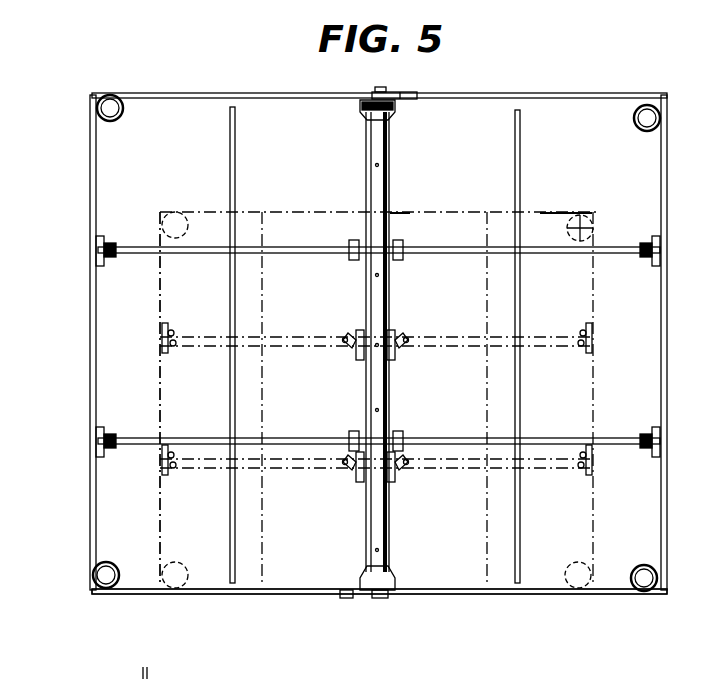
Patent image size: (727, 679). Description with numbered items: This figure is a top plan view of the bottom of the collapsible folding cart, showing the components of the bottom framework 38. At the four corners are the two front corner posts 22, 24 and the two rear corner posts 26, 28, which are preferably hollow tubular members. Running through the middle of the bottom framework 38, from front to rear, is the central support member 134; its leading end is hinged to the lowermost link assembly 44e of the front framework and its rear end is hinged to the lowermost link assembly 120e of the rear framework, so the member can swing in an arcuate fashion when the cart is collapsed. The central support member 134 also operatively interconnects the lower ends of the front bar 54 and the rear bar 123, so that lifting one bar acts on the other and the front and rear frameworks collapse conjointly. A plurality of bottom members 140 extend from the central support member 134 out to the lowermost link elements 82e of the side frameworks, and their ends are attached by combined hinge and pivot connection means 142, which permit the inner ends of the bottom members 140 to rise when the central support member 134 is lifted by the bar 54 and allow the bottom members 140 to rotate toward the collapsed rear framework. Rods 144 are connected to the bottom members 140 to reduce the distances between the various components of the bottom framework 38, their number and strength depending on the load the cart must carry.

The front corner post 22 is at (178, 225).
The front corner post 24 is at (635, 118).
The rear corner post 26 is at (175, 562).
The rear corner post 28 is at (575, 560).
The bottom framework 38 is at (497, 618).
The link assembly 44e is at (486, 89).
The bar 54 is at (375, 93).
The link element 82e is at (157, 375).
The link assembly 120e is at (335, 602).
The bar 123 is at (386, 598).
The central support member 134 is at (386, 193).
The bottom member 140 is at (305, 255).
The combined hinge and pivot connection means 142 is at (95, 250).
The rod 144 is at (242, 166).